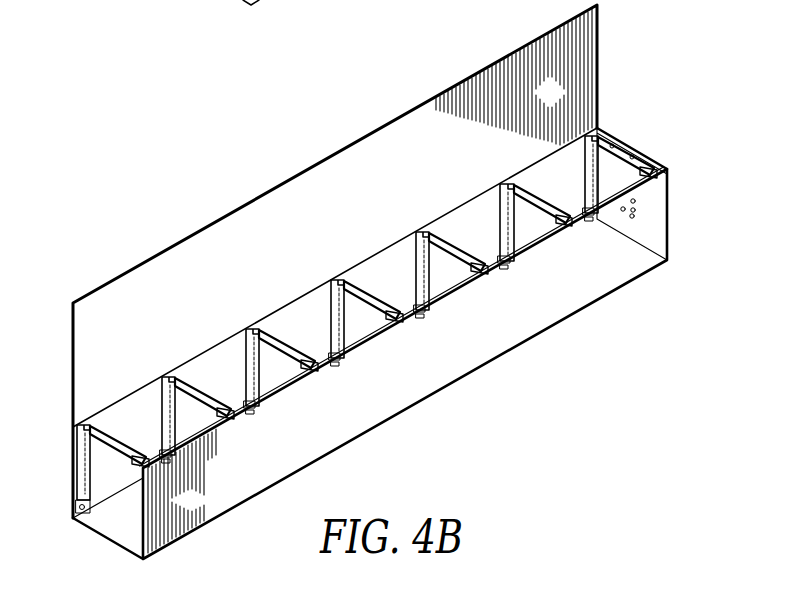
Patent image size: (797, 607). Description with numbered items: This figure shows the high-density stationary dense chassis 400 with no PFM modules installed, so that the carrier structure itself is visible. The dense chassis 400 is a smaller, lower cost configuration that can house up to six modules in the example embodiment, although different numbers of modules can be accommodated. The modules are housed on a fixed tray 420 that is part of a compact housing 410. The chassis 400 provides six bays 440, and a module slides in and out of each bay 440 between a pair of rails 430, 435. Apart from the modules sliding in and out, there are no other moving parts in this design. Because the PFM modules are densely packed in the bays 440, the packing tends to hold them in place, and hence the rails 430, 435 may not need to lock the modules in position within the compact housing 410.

The high-density stationary dense chassis 400 is at (383, 282).
The compact housing 410 is at (663, 226).
The fixed tray 420 is at (100, 317).
The rail 430 is at (419, 266).
The rail 435 is at (446, 246).
The bay 440 is at (475, 230).